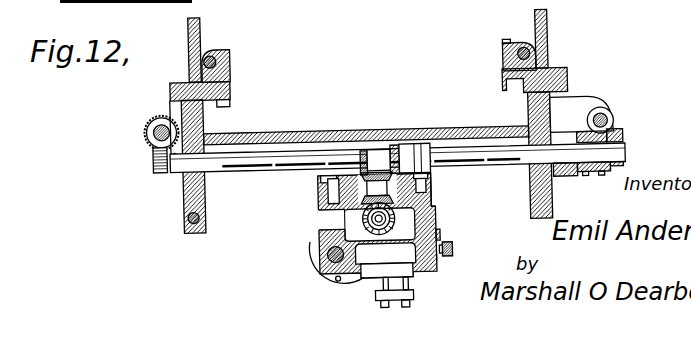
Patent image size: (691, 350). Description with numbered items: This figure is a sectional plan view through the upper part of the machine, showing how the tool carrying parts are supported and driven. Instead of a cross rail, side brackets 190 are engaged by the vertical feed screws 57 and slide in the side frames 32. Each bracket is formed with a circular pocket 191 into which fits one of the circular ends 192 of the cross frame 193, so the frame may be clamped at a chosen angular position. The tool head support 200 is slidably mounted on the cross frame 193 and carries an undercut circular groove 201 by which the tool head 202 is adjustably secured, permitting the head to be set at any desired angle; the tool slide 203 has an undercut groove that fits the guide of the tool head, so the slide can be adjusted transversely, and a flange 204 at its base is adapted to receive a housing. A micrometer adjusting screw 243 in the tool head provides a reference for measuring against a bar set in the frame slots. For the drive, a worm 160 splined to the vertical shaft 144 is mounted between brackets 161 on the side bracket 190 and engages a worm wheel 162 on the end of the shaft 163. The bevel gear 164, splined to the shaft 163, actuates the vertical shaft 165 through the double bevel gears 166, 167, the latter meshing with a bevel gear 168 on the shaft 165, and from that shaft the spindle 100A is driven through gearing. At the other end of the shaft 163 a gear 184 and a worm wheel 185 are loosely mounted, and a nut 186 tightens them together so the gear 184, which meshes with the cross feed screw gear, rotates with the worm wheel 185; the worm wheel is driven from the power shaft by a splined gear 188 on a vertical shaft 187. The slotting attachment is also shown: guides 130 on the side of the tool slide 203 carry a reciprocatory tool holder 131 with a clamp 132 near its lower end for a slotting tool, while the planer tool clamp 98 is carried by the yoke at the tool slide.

The side frames 32 is at (203, 28).
The vertical feed screws 57 is at (218, 46).
The side bracket 190 is at (232, 64).
The circular pocket 191 is at (186, 202).
The circular ends of cross frame 192 is at (206, 120).
The cross frame 193 is at (317, 131).
The vertical shaft 144 is at (159, 112).
The worm 160 is at (146, 128).
The brackets 161 is at (146, 121).
The worm wheel 162 is at (154, 156).
The shaft 163 is at (233, 164).
The bevel gear 164 is at (389, 144).
The double bevel gear 166 is at (362, 175).
The double bevel gear 167 is at (356, 200).
The vertical shaft 165 is at (344, 211).
The bevel gear 168 is at (398, 218).
The tool head support 200 is at (318, 177).
The undercut circular groove 201 is at (323, 183).
The tool head 202 is at (431, 192).
The tool slide 203 is at (334, 230).
The flange 204 is at (437, 210).
The micrometer adjusting screw 243 is at (430, 178).
The spindle 100A is at (326, 266).
The planer tool clamp 98 is at (374, 293).
The guides 130 is at (439, 238).
The reciprocatory tool holder 131 is at (439, 258).
The clamp 132 is at (452, 251).
The vertical shaft 187 is at (606, 119).
The splined gear 188 is at (613, 127).
The worm wheel 185 is at (614, 133).
The nut 186 is at (624, 138).
The gear 184 is at (573, 180).